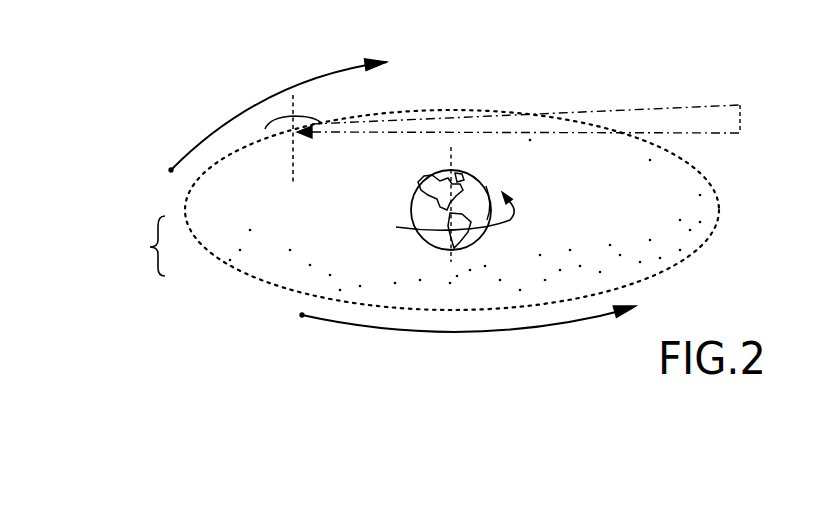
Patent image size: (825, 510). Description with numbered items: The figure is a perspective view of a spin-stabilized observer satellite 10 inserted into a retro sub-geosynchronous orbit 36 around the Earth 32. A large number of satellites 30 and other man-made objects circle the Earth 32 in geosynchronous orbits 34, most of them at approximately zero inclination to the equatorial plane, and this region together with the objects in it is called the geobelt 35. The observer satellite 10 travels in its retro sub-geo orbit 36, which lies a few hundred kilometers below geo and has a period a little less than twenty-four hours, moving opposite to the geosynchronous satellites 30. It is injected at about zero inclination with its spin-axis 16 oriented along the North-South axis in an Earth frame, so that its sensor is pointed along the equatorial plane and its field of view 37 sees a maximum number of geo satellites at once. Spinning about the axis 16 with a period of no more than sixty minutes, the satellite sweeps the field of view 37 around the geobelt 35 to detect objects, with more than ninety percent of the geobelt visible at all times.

The observer satellite 10 is at (281, 145).
The spin-axis 16 is at (308, 171).
The satellites 30 is at (735, 230).
The Earth 32 is at (483, 175).
The geosynchronous orbit 34 is at (468, 341).
The geobelt 35 is at (141, 246).
The retro sub-geosynchronous orbit 36 is at (240, 105).
The field of view 37 is at (669, 94).